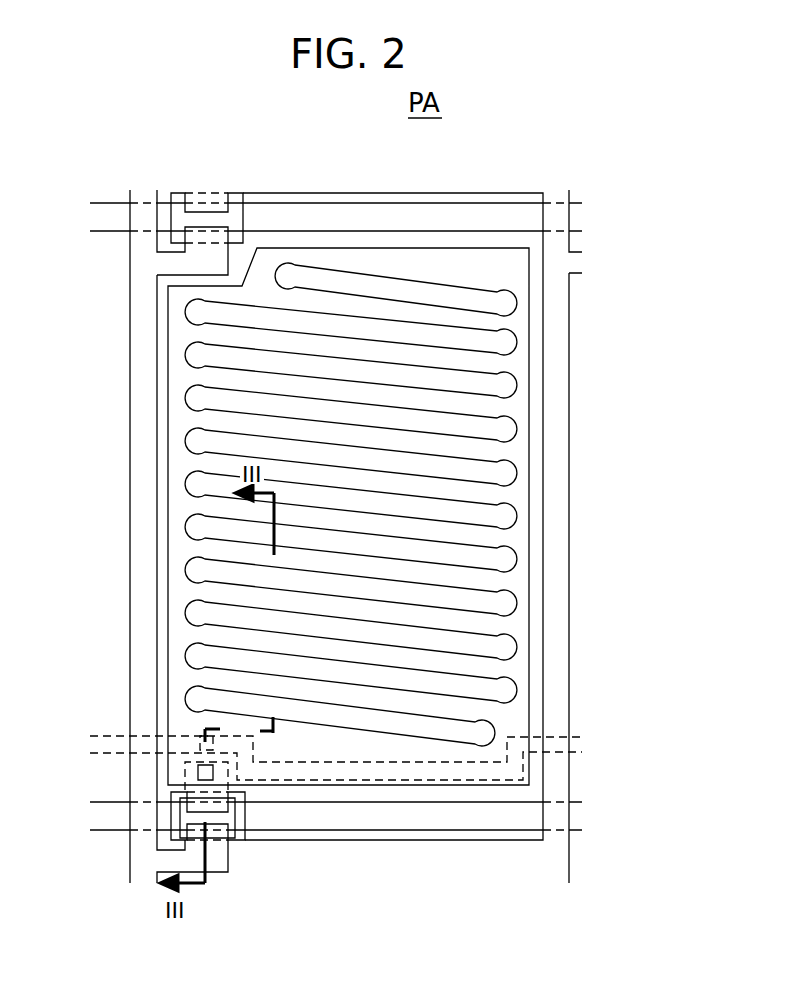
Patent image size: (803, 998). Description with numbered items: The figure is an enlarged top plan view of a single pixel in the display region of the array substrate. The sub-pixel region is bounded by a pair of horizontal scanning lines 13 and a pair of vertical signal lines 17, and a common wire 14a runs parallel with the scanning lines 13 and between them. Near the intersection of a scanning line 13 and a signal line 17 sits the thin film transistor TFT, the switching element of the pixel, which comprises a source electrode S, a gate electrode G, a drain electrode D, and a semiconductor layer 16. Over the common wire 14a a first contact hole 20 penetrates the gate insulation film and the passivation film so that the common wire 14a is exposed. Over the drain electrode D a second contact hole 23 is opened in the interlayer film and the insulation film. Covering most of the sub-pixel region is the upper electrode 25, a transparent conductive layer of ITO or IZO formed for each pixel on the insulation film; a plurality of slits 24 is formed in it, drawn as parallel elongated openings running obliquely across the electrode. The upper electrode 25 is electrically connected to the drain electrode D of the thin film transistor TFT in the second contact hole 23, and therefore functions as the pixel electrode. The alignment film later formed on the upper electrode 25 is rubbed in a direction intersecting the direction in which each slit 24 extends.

The scanning line 13 is at (497, 212).
The signal line 17 is at (130, 333).
The upper electrode 25 is at (178, 418).
The slit 24 is at (483, 384).
The common wire 14a is at (535, 740).
The first contact hole 20 is at (205, 742).
The second contact hole 23 is at (198, 772).
The semiconductor layer 16 is at (187, 818).
The gate electrode G is at (167, 837).
The drain electrode D is at (225, 793).
The source electrode S is at (222, 865).
The thin film transistor TFT is at (242, 870).